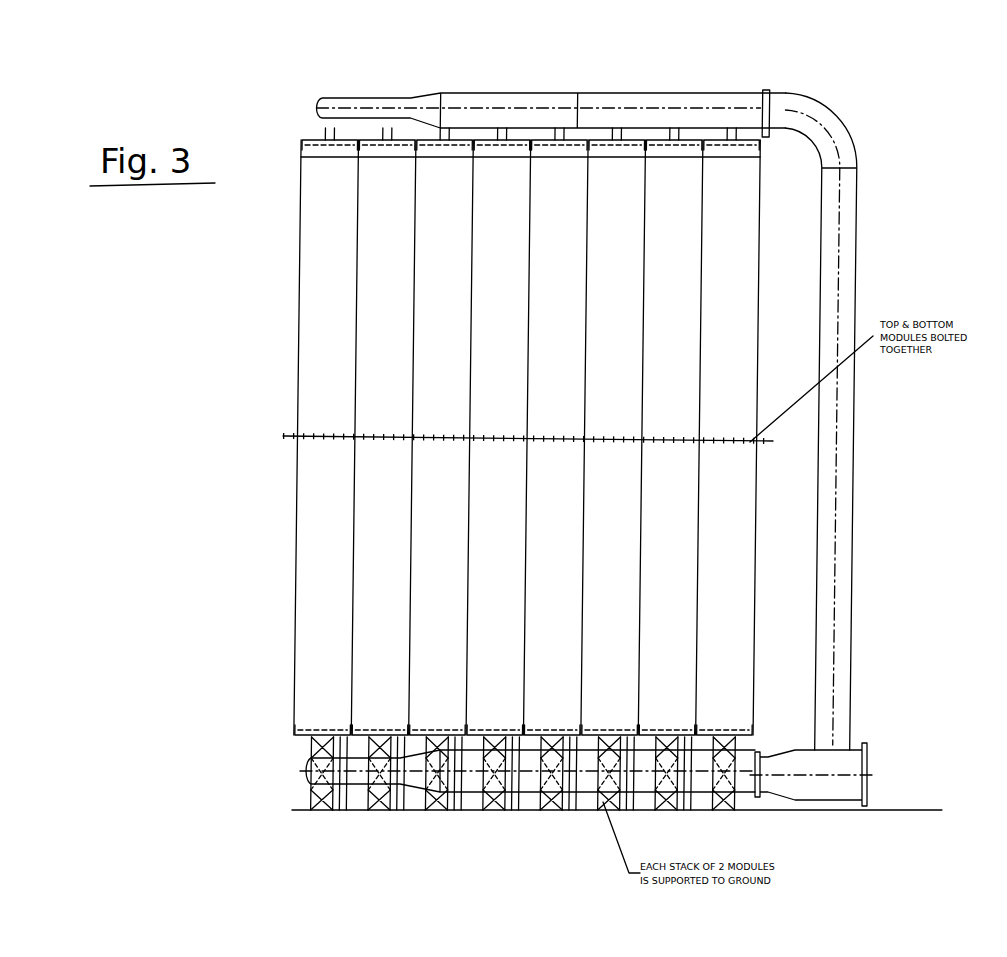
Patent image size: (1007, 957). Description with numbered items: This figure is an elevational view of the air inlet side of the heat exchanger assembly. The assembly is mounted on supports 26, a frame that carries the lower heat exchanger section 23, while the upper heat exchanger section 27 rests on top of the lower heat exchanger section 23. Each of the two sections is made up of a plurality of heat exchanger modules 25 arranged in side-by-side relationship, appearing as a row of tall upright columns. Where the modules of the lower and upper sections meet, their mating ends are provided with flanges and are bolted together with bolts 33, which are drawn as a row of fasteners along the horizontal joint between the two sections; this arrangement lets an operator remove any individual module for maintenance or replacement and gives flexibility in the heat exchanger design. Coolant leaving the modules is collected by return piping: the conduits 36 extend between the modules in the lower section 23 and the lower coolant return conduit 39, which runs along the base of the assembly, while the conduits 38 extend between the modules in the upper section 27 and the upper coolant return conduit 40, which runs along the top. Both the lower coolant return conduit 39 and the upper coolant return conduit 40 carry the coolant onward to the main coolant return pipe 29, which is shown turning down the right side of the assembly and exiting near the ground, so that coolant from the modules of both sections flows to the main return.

The lower heat exchanger section 23 is at (288, 600).
The heat exchanger modules 25 is at (443, 535).
The supports 26 is at (330, 782).
The upper heat exchanger section 27 is at (288, 309).
The main coolant return pipe 29 is at (855, 765).
The bolts 33 is at (672, 441).
The conduits 36 is at (371, 750).
The conduits 38 is at (618, 129).
The lower coolant return conduit 39 is at (453, 785).
The upper coolant return conduit 40 is at (653, 100).